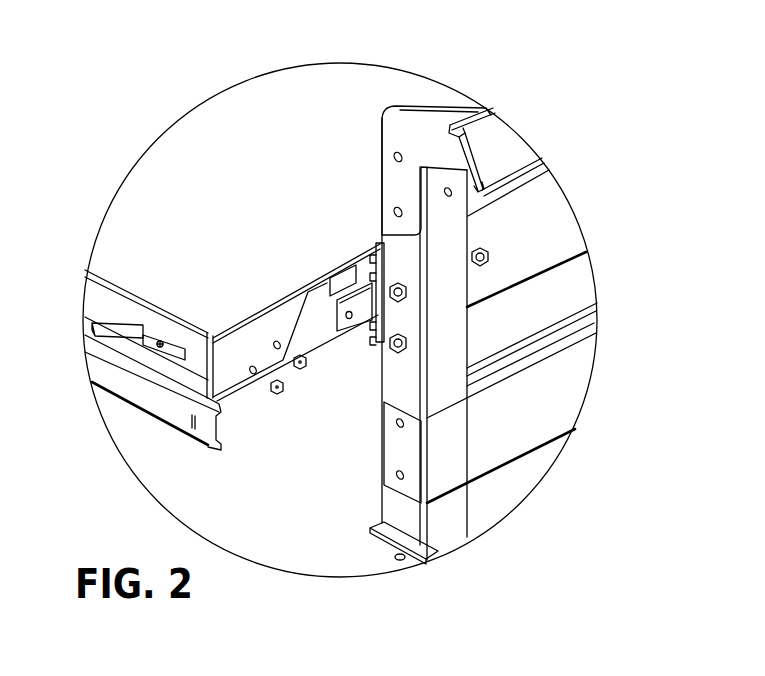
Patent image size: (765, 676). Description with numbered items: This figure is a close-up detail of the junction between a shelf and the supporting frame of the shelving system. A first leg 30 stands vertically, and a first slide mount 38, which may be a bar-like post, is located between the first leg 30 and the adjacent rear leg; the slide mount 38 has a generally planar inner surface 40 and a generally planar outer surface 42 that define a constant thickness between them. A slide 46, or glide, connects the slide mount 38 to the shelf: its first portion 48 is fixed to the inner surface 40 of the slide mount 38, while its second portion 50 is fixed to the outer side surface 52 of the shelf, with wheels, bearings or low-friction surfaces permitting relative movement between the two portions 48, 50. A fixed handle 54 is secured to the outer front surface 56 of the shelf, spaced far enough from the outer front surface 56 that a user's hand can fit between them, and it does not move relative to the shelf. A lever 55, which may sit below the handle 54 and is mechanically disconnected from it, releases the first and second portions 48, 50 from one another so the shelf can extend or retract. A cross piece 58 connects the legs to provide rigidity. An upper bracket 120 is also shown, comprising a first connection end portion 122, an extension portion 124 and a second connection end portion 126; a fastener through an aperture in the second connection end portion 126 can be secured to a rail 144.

The first leg 30 is at (458, 517).
The first slide mount 38 is at (578, 275).
The inner surface 40 is at (383, 236).
The outer surface 42 is at (550, 187).
The slide 46 is at (346, 357).
The first portion 48 is at (366, 337).
The second portion 50 is at (343, 302).
The outer side surface 52 is at (258, 337).
The fixed handle 54 is at (115, 323).
The lever 55 is at (242, 402).
The outer front surface 56 is at (182, 347).
The cross piece 58 is at (572, 375).
The upper bracket 120 is at (393, 114).
The first connection end portion 122 is at (378, 180).
The extension portion 124 is at (424, 118).
The second connection end portion 126 is at (453, 113).
The rail 144 is at (510, 142).